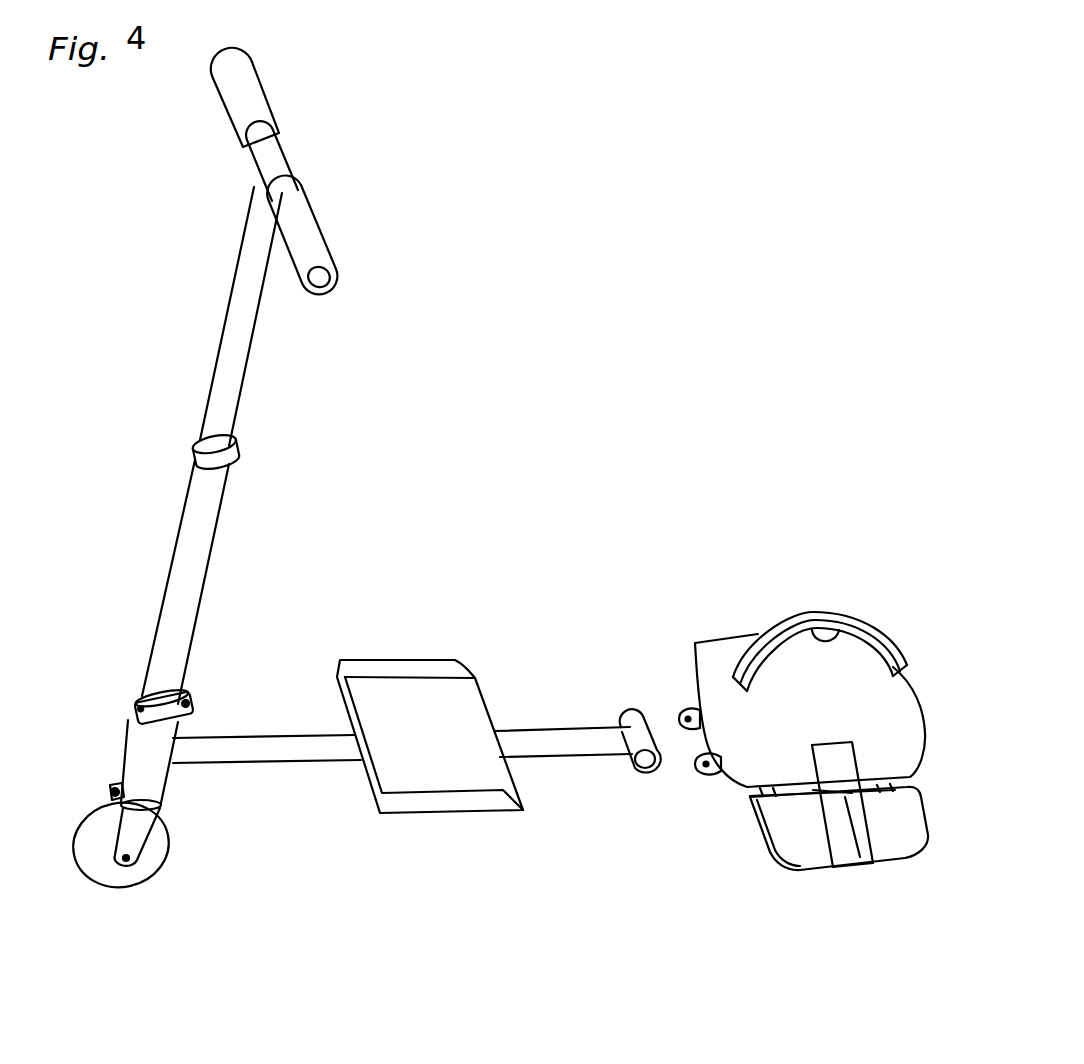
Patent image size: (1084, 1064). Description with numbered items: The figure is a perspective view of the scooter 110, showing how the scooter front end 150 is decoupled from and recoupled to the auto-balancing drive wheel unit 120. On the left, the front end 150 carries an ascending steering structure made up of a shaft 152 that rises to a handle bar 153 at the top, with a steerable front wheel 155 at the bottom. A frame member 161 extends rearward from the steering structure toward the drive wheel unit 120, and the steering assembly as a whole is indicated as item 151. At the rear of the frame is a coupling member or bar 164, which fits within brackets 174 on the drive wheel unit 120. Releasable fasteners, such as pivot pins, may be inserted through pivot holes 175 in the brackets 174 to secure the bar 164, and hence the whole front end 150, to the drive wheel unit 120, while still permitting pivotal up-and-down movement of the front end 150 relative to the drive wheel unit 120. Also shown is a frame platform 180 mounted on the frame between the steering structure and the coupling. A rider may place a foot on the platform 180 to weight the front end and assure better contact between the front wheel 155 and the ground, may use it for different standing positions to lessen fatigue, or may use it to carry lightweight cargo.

The scooter 110 is at (625, 325).
The auto-balancing drive wheel unit 120 is at (865, 598).
The scooter front end 150 is at (326, 914).
The scooter attachment 151 is at (138, 320).
The shaft 152 is at (183, 506).
The handle bar 153 is at (302, 160).
The steerable front wheel 155 is at (100, 887).
The connecting bar 161 is at (242, 770).
The coupling bar 164 is at (637, 773).
The brackets 174 is at (682, 710).
The pivot holes 175 is at (710, 775).
The frame platform 180 is at (468, 813).